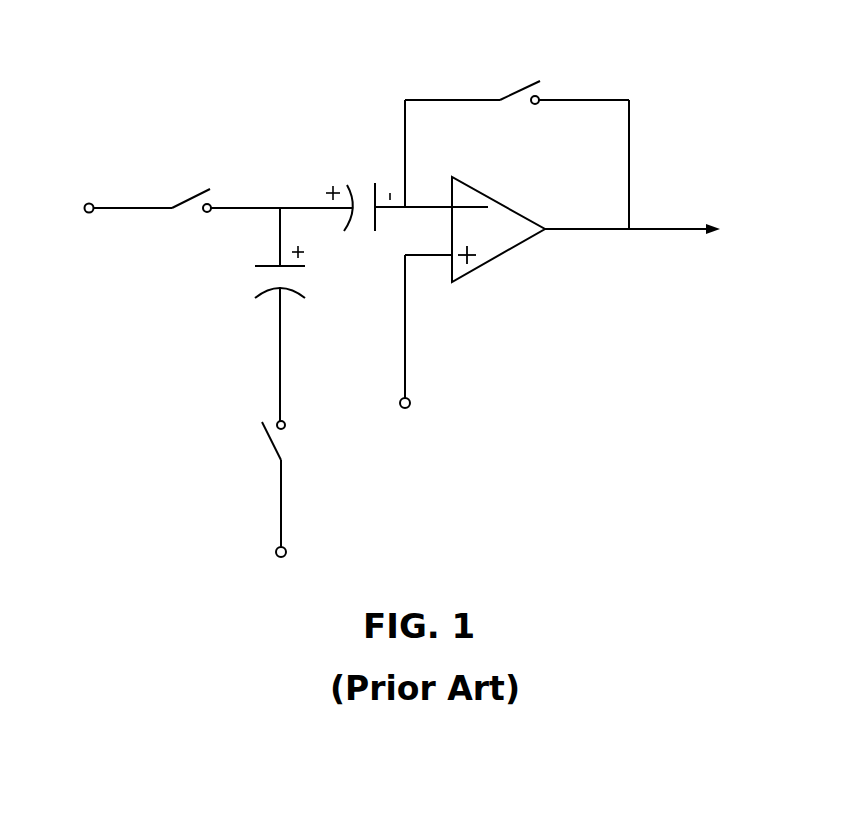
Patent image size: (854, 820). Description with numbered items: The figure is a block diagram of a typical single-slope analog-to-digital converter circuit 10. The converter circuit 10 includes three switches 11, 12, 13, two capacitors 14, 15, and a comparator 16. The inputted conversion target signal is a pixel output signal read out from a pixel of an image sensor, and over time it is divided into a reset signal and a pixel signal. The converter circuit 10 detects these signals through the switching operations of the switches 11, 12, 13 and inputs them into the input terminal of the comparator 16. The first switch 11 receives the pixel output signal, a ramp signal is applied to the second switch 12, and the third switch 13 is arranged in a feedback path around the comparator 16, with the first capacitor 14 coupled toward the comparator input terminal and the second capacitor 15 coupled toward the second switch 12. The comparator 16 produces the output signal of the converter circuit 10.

The converter circuit 10 is at (57, 52).
The switch 11 is at (185, 200).
The switch 12 is at (262, 443).
The switch 13 is at (510, 96).
The capacitor 14 is at (346, 186).
The capacitor 15 is at (258, 296).
The comparator 16 is at (493, 257).